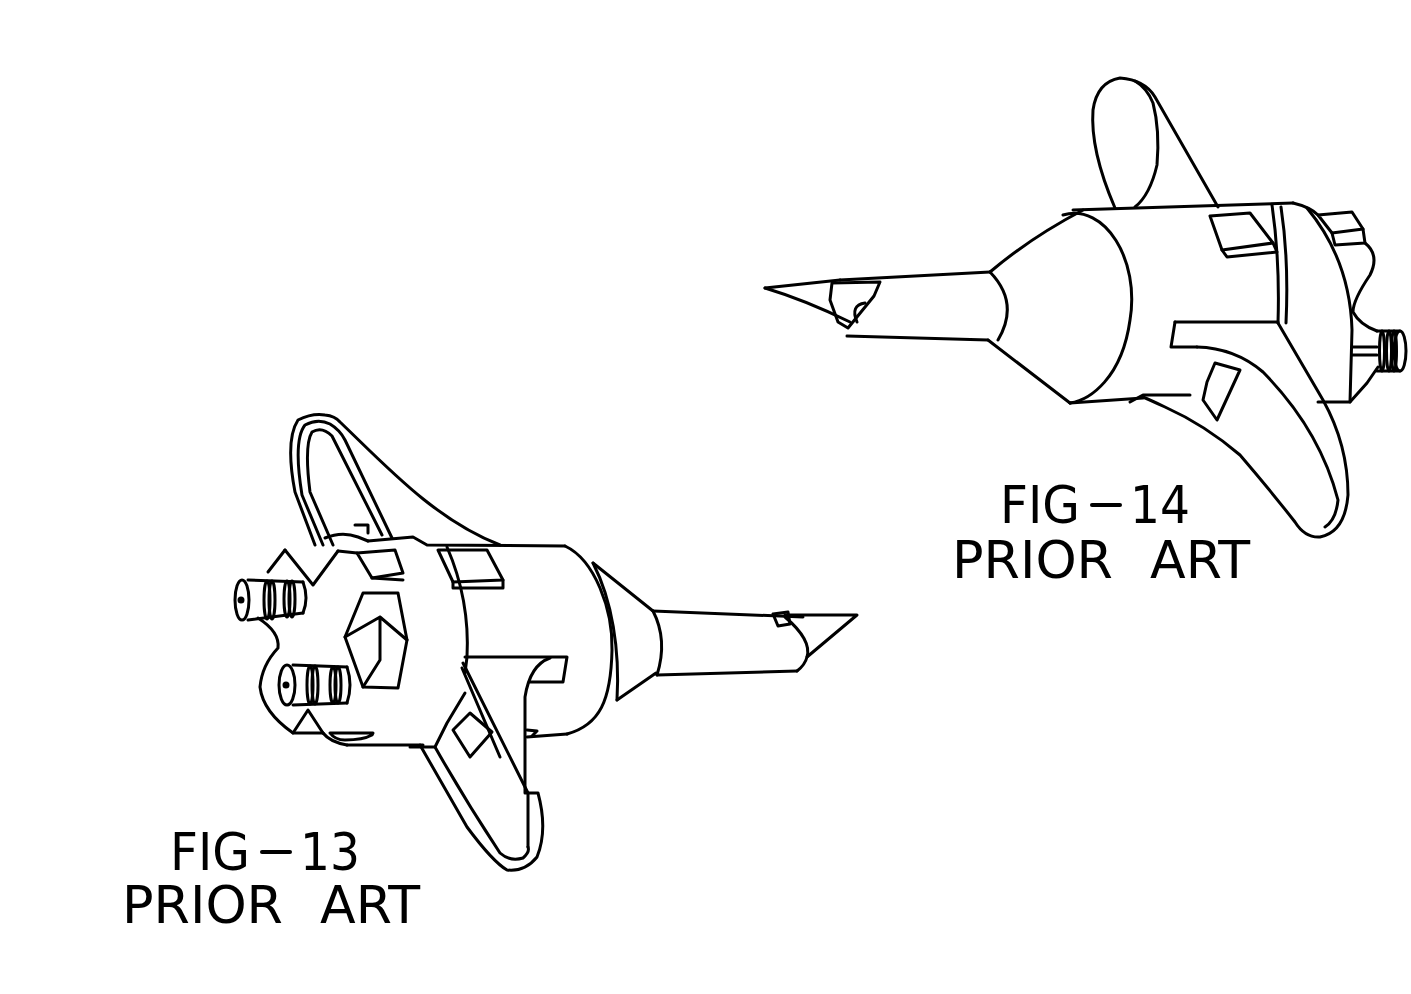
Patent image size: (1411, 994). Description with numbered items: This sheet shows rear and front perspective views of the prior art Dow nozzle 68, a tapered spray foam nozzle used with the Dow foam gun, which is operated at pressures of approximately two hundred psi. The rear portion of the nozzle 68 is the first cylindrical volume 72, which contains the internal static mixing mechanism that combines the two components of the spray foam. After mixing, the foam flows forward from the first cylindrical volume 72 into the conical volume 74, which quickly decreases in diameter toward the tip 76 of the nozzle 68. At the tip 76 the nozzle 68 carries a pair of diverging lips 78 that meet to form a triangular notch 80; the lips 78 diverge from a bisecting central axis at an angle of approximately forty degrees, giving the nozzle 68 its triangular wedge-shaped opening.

In FIG. 13, the Dow nozzle 68 is at (468, 432).
In FIG. 14, the Dow nozzle 68 is at (1290, 141).
In FIG. 13, the first cylindrical volume 72 is at (527, 566).
In FIG. 14, the first cylindrical volume 72 is at (1127, 380).
In FIG. 13, the conical volume 74 is at (617, 598).
In FIG. 14, the conical volume 74 is at (1053, 243).
In FIG. 13, the tip 76 is at (705, 628).
In FIG. 14, the tip 76 is at (937, 283).
In FIG. 13, the diverging lips 78 is at (837, 630).
In FIG. 14, the diverging lips 78 is at (788, 301).
In FIG. 13, the triangular notch 80 is at (778, 622).
In FIG. 14, the triangular notch 80 is at (864, 290).